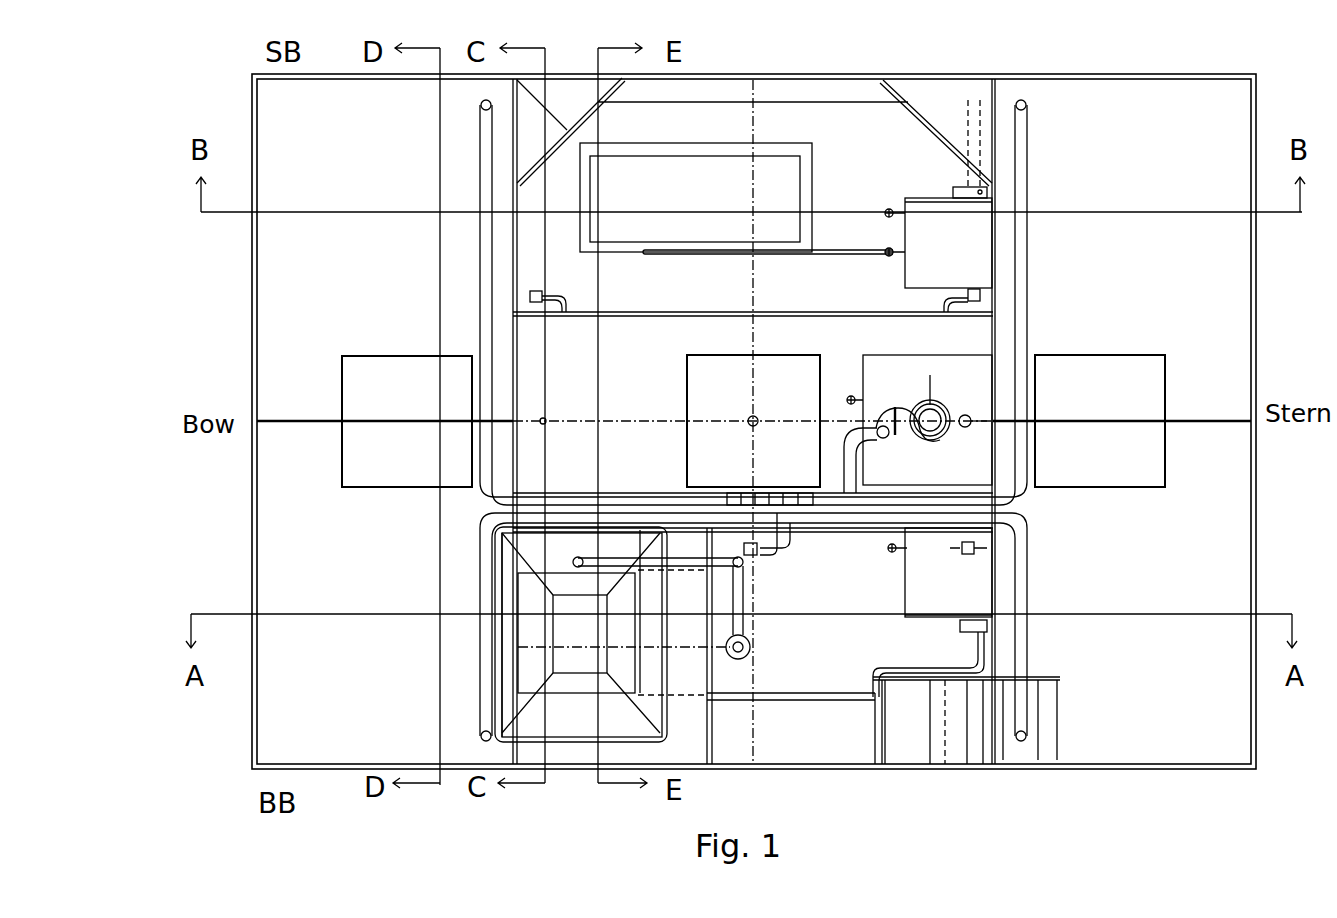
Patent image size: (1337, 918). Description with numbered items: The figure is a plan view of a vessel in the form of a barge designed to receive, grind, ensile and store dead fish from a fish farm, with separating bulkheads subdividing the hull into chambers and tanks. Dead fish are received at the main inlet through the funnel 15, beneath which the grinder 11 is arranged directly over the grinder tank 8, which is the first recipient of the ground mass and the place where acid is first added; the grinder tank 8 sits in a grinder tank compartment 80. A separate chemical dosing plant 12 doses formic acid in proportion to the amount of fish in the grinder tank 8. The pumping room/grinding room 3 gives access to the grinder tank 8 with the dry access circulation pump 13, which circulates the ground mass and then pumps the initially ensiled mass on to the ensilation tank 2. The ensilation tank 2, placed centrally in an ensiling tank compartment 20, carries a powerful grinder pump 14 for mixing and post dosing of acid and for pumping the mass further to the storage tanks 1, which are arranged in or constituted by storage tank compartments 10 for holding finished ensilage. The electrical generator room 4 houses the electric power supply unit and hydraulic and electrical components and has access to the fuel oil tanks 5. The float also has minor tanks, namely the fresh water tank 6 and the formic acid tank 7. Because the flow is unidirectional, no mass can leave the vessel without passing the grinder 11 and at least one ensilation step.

The storage tank 1 is at (754, 421).
The storage tank compartment 10 is at (754, 421).
The ensilation tank 2 is at (682, 562).
The ensiling tank compartment 20 is at (754, 421).
The pumping room/grinding room 3 is at (918, 612).
The electrical generator room 4 is at (736, 207).
The fuel oil tank 5 is at (754, 132).
The fresh water tank 6 is at (883, 720).
The formic acid tank 7 is at (753, 430).
The grinder tank 8 is at (658, 582).
The grinder tank compartment 80 is at (603, 611).
The grinder 11 is at (624, 634).
The chemical dosing plant 12 is at (600, 634).
The circulation pump 13 is at (754, 601).
The grinder pump 14 is at (918, 424).
The funnel 15 is at (590, 667).